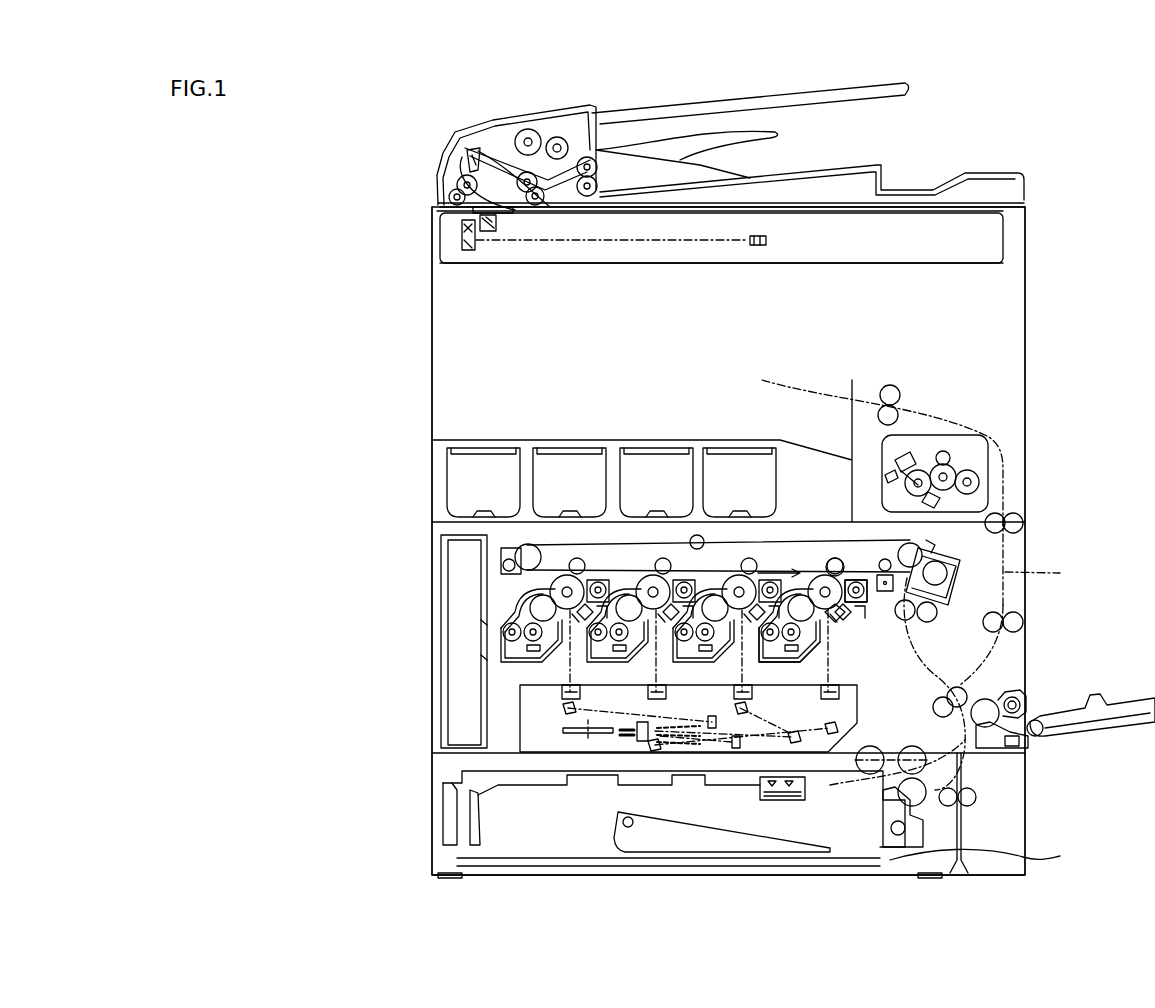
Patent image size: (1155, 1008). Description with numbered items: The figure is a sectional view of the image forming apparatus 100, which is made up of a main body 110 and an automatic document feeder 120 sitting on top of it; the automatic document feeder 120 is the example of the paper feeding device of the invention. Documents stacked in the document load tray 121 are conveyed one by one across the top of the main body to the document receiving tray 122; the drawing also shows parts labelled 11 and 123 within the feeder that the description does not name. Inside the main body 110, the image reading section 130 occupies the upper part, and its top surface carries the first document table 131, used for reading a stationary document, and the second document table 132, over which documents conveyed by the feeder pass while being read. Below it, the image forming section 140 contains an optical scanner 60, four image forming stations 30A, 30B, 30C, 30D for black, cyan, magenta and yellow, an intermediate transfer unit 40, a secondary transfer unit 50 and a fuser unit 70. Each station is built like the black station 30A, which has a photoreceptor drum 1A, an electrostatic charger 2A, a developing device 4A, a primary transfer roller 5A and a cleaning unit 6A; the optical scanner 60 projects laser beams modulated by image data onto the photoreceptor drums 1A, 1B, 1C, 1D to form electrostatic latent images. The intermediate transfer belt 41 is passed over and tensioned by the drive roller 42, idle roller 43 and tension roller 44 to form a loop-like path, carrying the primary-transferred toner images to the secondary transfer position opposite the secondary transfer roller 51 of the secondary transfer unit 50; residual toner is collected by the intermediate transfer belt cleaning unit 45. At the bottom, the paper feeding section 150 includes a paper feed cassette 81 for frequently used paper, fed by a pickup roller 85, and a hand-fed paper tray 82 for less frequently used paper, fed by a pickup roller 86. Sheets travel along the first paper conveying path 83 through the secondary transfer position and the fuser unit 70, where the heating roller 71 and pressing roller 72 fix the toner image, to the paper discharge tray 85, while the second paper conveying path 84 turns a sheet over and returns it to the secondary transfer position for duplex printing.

The image forming apparatus 100 is at (332, 133).
The main body 110 is at (399, 206).
The automatic document feeder 120 is at (716, 139).
The document load tray 121 is at (752, 110).
The document receiving tray 122 is at (855, 165).
The document feed lever 123 is at (455, 158).
The document conveying rollers 11 is at (560, 140).
The image reading section 130 is at (696, 235).
The first document table 131 is at (838, 213).
The second document table 132 is at (500, 222).
The image forming section 140 is at (422, 526).
The paper feeding section 150 is at (422, 815).
The image forming station 30A is at (829, 543).
The image forming station 30B is at (730, 543).
The image forming station 30C is at (638, 543).
The image forming station 30D is at (585, 542).
The photoreceptor drum 1A is at (818, 620).
The photoreceptor drum 1B is at (727, 619).
The photoreceptor drum 1C is at (641, 619).
The photoreceptor drum 1D is at (555, 619).
The electrostatic charger 2A is at (840, 626).
The developing device 4A is at (784, 663).
The primary transfer roller 5A is at (840, 565).
The cleaning unit 6A is at (862, 608).
The intermediate transfer unit 40 is at (707, 532).
The intermediate transfer belt 41 is at (826, 541).
The drive roller 42 is at (932, 548).
The idle roller 43 is at (530, 545).
The tension roller 44 is at (690, 553).
The intermediate transfer belt cleaning unit 45 is at (510, 546).
The secondary transfer unit 50 is at (950, 569).
The secondary transfer roller 51 is at (948, 590).
The optical scanner 60 is at (858, 700).
The fuser unit 70 is at (980, 449).
The heating roller 71 is at (948, 478).
The pressing roller 72 is at (979, 482).
The paper feed cassette 81 is at (988, 813).
The hand-fed paper tray 82 is at (1115, 695).
The first paper conveying path 83 is at (912, 662).
The second paper conveying path 84 is at (1022, 599).
The pickup roller 85 is at (650, 440).
The pickup roller 86 is at (1020, 700).